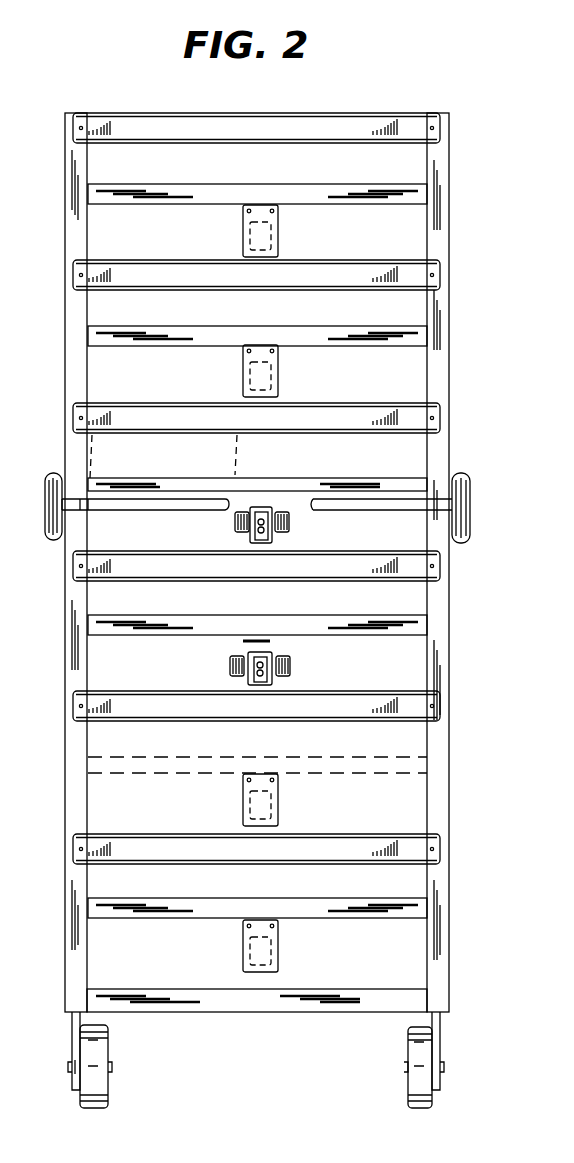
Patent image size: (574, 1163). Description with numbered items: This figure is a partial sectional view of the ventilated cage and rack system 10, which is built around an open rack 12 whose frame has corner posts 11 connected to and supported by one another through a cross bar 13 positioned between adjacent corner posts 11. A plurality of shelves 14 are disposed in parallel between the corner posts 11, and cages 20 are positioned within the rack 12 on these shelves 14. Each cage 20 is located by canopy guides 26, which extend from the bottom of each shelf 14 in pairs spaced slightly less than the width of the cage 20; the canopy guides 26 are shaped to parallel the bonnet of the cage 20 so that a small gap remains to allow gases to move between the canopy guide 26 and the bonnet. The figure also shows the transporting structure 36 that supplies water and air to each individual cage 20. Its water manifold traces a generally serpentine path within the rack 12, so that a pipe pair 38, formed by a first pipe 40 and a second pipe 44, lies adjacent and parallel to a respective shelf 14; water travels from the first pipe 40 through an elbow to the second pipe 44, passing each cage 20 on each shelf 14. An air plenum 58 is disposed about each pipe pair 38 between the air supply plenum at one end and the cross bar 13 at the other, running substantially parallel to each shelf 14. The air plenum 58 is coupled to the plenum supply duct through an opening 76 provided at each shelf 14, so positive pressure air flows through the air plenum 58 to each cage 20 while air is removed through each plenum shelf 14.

The ventilated cage and rack system 10 is at (452, 386).
The corner post 11 is at (77, 645).
The open rack 12 is at (452, 447).
The cross bar 13 is at (362, 130).
The shelf 14 is at (331, 1005).
The cage 20 is at (236, 422).
The canopy guide 26 is at (260, 176).
The transporting structure 36 is at (290, 531).
The pipe pair 38 is at (278, 509).
The first pipe 40 is at (235, 520).
The second pipe 44 is at (260, 544).
The air plenum 58 is at (248, 503).
The opening 76 is at (278, 236).